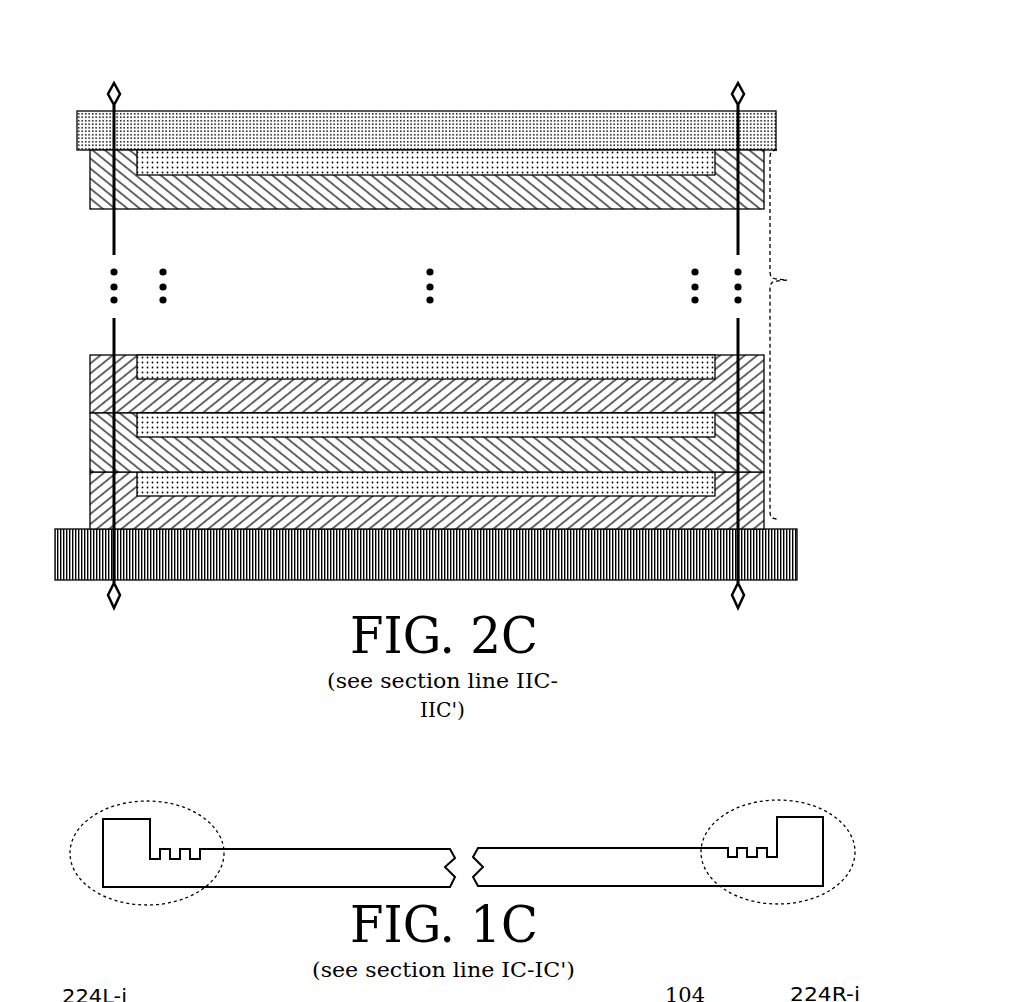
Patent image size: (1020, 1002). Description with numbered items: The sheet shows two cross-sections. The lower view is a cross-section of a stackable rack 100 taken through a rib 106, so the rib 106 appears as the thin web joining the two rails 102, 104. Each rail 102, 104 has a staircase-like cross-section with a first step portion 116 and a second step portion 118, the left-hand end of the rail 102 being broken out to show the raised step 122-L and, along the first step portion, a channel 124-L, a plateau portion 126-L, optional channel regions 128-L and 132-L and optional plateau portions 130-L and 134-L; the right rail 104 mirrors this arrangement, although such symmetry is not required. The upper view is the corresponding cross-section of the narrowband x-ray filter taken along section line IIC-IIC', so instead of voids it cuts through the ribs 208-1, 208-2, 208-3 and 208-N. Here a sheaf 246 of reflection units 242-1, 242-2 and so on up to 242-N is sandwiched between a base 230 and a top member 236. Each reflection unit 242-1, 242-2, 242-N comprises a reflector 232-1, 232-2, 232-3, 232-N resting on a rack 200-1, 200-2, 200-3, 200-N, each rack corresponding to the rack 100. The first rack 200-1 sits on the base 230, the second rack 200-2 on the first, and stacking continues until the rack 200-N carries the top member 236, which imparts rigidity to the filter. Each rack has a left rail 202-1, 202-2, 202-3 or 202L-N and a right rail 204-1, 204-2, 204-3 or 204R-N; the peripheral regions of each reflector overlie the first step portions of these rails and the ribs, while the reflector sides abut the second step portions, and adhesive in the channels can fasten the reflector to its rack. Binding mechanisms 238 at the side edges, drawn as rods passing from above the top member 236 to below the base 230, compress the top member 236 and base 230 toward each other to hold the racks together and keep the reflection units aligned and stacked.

In FIG. 2C, the top member 236 is at (449, 140).
In FIG. 2C, the base 230 is at (449, 564).
In FIG. 2C, the reflection unit 242-N is at (478, 131).
In FIG. 2C, the reflection unit 242-1 is at (475, 376).
In FIG. 2C, the reflection unit 242-2 is at (480, 367).
In FIG. 2C, the rib 208-N is at (388, 192).
In FIG. 2C, the rib 208-1 is at (327, 508).
In FIG. 2C, the rib 208-2 is at (375, 457).
In FIG. 2C, the rib 208-3 is at (423, 392).
In FIG. 2C, the reflector 232-N is at (518, 160).
In FIG. 2C, the reflector 232-1 is at (580, 483).
In FIG. 2C, the reflector 232-2 is at (531, 420).
In FIG. 2C, the reflector 232-3 is at (481, 363).
In FIG. 2C, the rack 200-N is at (234, 210).
In FIG. 2C, the rack 200-1 is at (685, 617).
In FIG. 2C, the rack 200-2 is at (651, 603).
In FIG. 2C, the rack 200-3 is at (624, 589).
In FIG. 2C, the sheaf 246 is at (805, 334).
In FIG. 2C, the rail 202L-N is at (133, 302).
In FIG. 2C, the rail 204R-N is at (750, 165).
In FIG. 2C, the binding mechanism 238 is at (426, 339).
In FIG. 2C, the rail 202-1 is at (157, 512).
In FIG. 2C, the rail 202-2 is at (124, 450).
In FIG. 2C, the rail 202-3 is at (104, 395).
In FIG. 2C, the rail 204-1 is at (727, 508).
In FIG. 2C, the rail 204-2 is at (745, 450).
In FIG. 2C, the rail 204-3 is at (805, 333).
In FIG. 1C, the stackable rack 100 is at (462, 841).
In FIG. 1C, the rail 102 is at (279, 873).
In FIG. 1C, the rail 104 is at (648, 872).
In FIG. 1C, the rib 106 is at (363, 858).
In FIG. 1C, the first step portion 116 is at (218, 912).
In FIG. 1C, the second step portion 118 is at (145, 916).
In FIG. 1C, the second step portion 122-L is at (101, 797).
In FIG. 1C, the channel 124-L is at (110, 803).
In FIG. 1C, the plateau portion 126-L is at (119, 787).
In FIG. 1C, the channel region 128-L is at (221, 797).
In FIG. 1C, the plateau portion 130-L is at (235, 808).
In FIG. 1C, the channel region 132-L is at (250, 825).
In FIG. 1C, the plateau portion 134-L is at (275, 833).